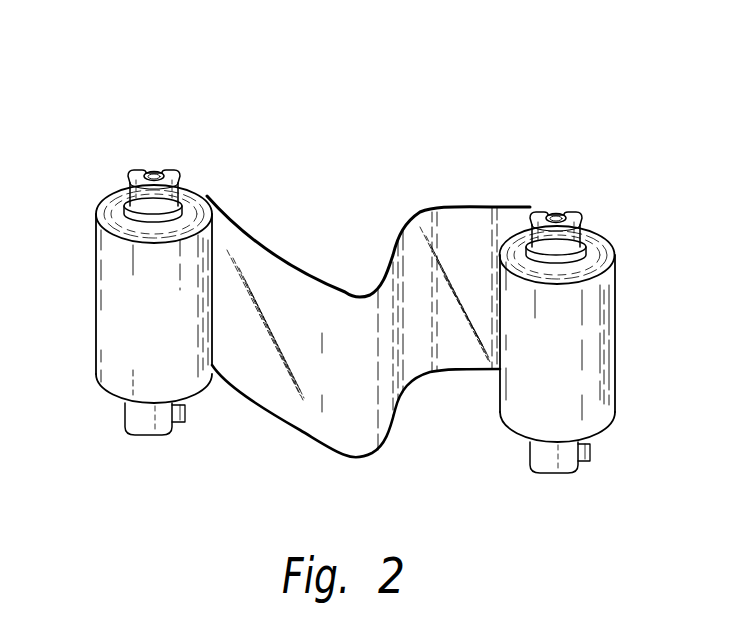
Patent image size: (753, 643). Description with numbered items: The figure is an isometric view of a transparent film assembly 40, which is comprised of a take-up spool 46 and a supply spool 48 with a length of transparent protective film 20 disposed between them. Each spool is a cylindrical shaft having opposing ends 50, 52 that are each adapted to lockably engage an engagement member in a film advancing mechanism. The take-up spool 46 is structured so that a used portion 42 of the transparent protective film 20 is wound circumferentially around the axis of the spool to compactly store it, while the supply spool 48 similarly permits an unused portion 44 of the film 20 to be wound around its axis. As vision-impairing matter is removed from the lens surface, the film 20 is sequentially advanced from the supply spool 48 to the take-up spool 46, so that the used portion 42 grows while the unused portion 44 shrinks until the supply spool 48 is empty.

The transparent protective film 20 is at (307, 297).
The transparent film assembly 40 is at (480, 110).
The used portion 42 is at (603, 337).
The unused portion 44 is at (117, 322).
The take-up spool 46 is at (596, 200).
The supply spool 48 is at (190, 155).
The end 50 is at (146, 170).
The end 52 is at (133, 423).